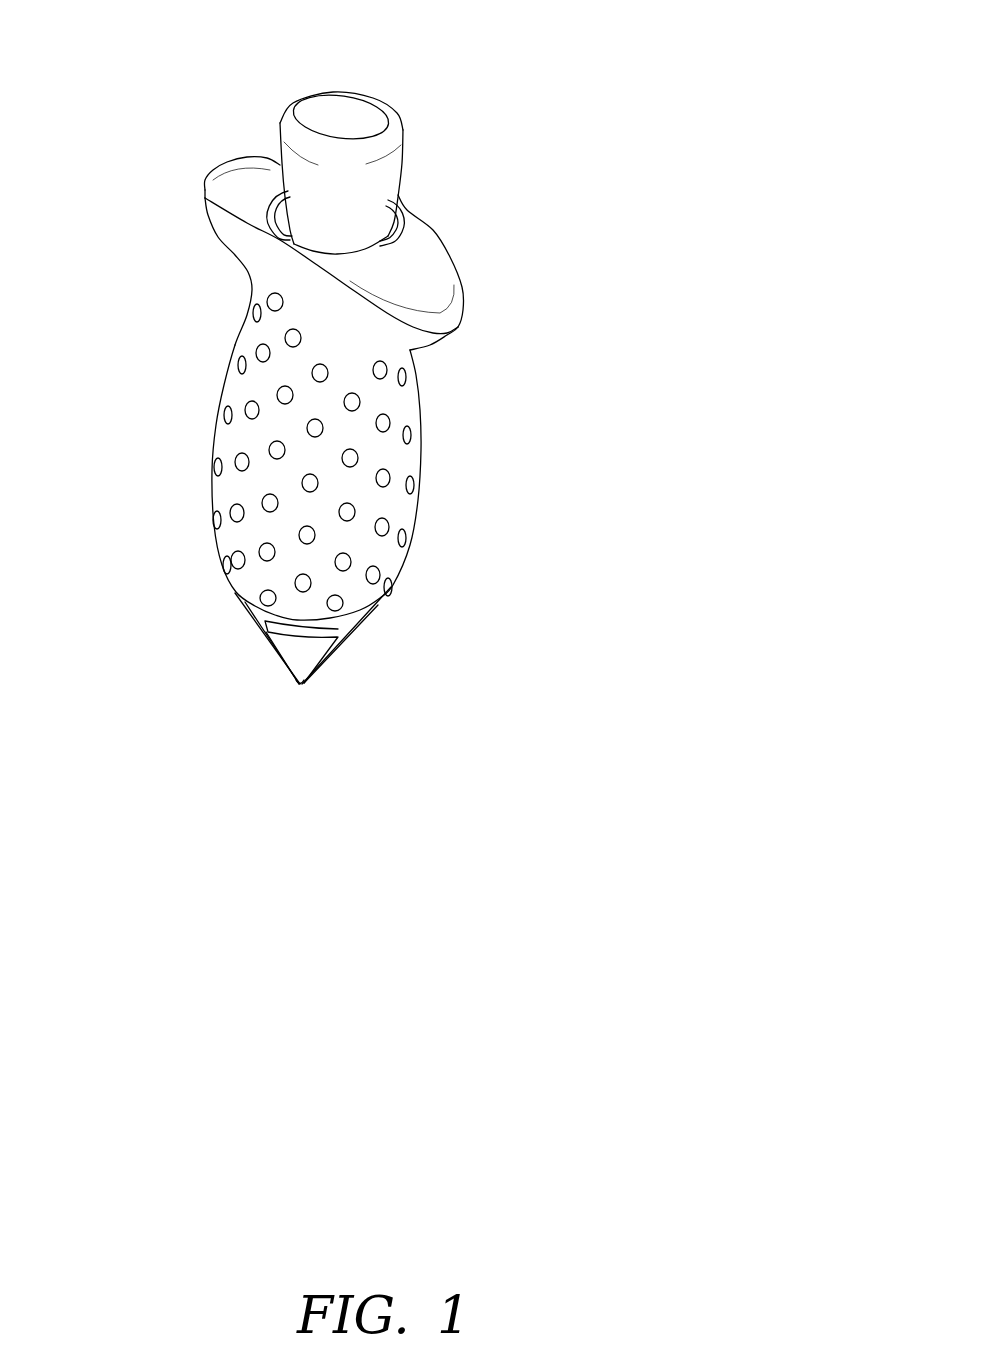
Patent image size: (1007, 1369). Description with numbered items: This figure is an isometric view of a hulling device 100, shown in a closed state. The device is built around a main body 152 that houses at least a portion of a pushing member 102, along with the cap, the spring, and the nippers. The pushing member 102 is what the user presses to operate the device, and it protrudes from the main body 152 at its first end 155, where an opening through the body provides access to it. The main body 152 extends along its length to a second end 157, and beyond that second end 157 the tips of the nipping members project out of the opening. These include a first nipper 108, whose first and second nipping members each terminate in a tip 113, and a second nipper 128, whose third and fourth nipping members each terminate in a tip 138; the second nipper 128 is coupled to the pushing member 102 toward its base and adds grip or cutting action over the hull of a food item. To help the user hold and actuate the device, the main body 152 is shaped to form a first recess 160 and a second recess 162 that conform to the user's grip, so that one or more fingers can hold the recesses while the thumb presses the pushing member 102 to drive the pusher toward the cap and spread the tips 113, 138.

The hulling device 100 is at (537, 100).
The pushing member 102 is at (401, 183).
The first end 155 is at (418, 280).
The second recess 162 is at (434, 353).
The main body 152 is at (421, 417).
The first recess 160 is at (233, 265).
The second end 157 is at (242, 612).
The first nipper 108 is at (259, 634).
The second nipper 128 is at (314, 651).
The tip 138 is at (294, 686).
The tip 113 is at (317, 681).